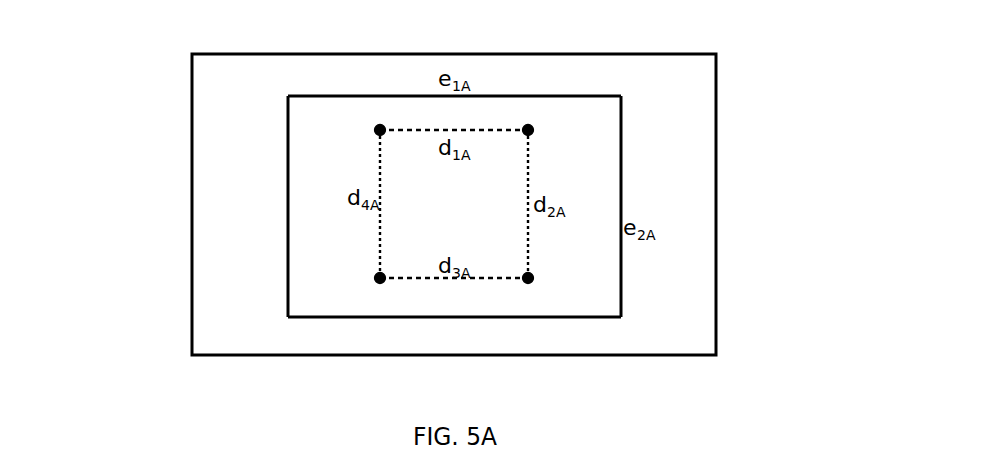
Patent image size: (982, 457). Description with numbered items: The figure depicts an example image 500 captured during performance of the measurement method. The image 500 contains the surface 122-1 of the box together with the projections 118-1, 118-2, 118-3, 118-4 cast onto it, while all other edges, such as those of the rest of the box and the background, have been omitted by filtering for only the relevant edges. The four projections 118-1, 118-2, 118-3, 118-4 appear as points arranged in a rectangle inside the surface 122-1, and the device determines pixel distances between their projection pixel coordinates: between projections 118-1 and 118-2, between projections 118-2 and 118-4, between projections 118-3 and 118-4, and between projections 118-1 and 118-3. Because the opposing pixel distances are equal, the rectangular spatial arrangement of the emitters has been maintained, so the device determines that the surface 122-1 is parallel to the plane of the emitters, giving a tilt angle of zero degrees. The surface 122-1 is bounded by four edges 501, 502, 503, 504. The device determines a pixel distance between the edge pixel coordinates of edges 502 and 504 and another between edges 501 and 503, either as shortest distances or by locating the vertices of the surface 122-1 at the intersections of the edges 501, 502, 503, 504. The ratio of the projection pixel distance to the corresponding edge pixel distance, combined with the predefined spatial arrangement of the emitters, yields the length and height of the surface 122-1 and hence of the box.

The image 500 is at (170, 199).
The edge 501 is at (530, 95).
The edge 502 is at (621, 182).
The edge 503 is at (380, 318).
The edge 504 is at (180, 205).
The surface 122-1 is at (450, 217).
The projection 118-1 is at (380, 130).
The projection 118-2 is at (528, 130).
The projection 118-3 is at (380, 278).
The projection 118-4 is at (528, 278).